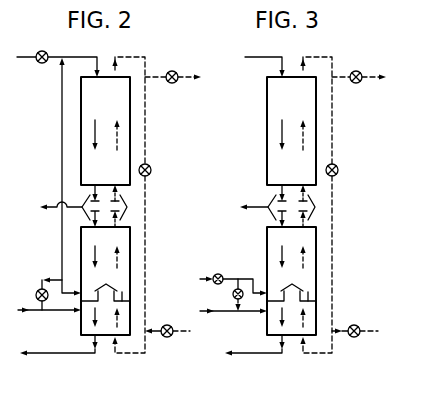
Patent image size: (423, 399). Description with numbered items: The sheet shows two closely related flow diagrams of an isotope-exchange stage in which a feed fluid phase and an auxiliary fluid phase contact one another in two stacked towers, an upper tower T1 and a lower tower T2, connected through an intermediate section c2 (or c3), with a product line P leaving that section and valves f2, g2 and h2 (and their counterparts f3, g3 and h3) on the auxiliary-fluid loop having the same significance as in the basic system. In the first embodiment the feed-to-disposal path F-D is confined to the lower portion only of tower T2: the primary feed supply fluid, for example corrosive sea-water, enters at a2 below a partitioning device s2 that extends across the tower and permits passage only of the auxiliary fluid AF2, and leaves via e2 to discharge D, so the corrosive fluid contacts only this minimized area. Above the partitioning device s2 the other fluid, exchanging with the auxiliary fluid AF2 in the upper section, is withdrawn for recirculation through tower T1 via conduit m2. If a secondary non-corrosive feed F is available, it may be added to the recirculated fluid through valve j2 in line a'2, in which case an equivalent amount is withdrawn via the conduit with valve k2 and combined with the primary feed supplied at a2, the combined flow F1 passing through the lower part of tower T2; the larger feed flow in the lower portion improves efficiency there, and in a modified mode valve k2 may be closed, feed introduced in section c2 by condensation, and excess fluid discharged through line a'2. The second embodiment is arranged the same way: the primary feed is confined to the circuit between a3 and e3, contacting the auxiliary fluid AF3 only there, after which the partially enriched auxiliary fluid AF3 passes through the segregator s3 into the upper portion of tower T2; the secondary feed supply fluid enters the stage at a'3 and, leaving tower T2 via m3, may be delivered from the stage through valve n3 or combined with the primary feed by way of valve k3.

In FIG. 2, the tower T1 is at (105, 131).
In FIG. 3, the tower T1 is at (291, 131).
In FIG. 2, the tower T2 is at (105, 281).
In FIG. 3, the tower T2 is at (291, 281).
In FIG. 2, the product line P is at (54, 207).
In FIG. 3, the product line P is at (247, 207).
In FIG. 2, the feed F is at (25, 64).
In FIG. 3, the feed F is at (249, 319).
In FIG. 2, the feed fraction F1 is at (58, 318).
In FIG. 2, the discharge D is at (33, 363).
In FIG. 3, the discharge D is at (236, 363).
In FIG. 2, the line a'2 is at (28, 50).
In FIG. 2, the valve j2 is at (50, 56).
In FIG. 2, the conduit m2 is at (61, 231).
In FIG. 2, the valve k2 is at (38, 289).
In FIG. 2, the primary feed supply inlet a2 is at (24, 308).
In FIG. 2, the partitioning device s2 is at (122, 292).
In FIG. 2, the valve f2 is at (151, 168).
In FIG. 2, the valve g2 is at (172, 84).
In FIG. 2, the section c2 is at (129, 200).
In FIG. 2, the valve h2 is at (171, 316).
In FIG. 2, the discharge conduit e2 is at (42, 352).
In FIG. 2, the auxiliary fluid AF2 is at (118, 355).
In FIG. 3, the secondary feed supply inlet a'3 is at (265, 57).
In FIG. 3, the valve f3 is at (339, 168).
In FIG. 3, the valve g3 is at (356, 84).
In FIG. 3, the section c3 is at (316, 200).
In FIG. 3, the valve n3 is at (215, 275).
In FIG. 3, the conduit m3 is at (256, 278).
In FIG. 3, the valve k3 is at (242, 288).
In FIG. 3, the primary feed supply inlet a3 is at (216, 310).
In FIG. 3, the segregator s3 is at (308, 292).
In FIG. 3, the valve h3 is at (356, 316).
In FIG. 3, the discharge conduit e3 is at (241, 352).
In FIG. 3, the auxiliary fluid AF3 is at (304, 355).